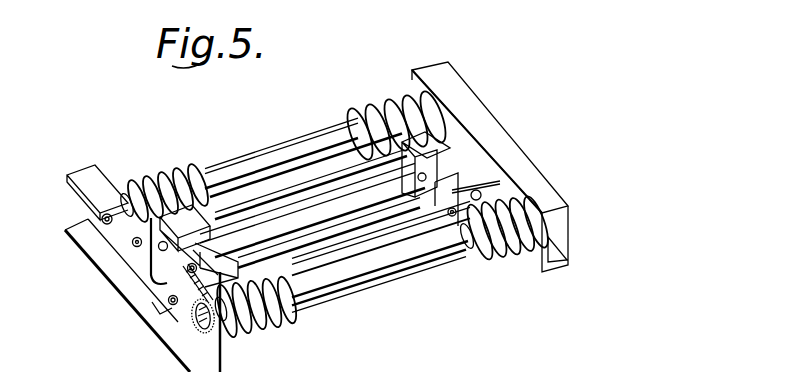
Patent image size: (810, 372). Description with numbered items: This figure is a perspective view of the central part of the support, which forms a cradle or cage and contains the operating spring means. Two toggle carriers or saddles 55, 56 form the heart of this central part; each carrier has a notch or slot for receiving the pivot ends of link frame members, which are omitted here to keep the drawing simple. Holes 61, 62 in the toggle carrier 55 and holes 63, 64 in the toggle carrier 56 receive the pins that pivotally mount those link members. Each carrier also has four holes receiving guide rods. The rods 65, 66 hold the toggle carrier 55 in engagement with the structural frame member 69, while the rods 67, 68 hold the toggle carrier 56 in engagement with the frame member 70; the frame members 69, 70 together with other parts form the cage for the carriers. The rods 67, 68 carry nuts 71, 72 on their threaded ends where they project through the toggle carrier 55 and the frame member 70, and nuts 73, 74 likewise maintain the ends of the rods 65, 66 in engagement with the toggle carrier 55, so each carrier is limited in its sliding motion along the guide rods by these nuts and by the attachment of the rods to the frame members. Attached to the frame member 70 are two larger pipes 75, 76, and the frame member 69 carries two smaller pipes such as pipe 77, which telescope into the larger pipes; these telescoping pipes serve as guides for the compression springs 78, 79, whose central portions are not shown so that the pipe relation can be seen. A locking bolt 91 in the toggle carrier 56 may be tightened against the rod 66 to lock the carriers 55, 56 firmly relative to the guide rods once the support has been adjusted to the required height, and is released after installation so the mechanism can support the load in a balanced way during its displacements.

The toggle carrier 55 is at (168, 185).
The toggle carrier 56 is at (428, 140).
The hole 61 is at (212, 184).
The hole 62 is at (270, 326).
The hole 63 is at (412, 189).
The hole 64 is at (452, 216).
The rod 65 is at (249, 236).
The rod 66 is at (317, 219).
The rod 67 is at (336, 257).
The rod 68 is at (292, 191).
The structural frame member 69 is at (538, 187).
The frame member 70 is at (90, 210).
The nut 71 is at (168, 314).
The nut 72 is at (158, 248).
The nut 73 is at (167, 299).
The nut 74 is at (186, 269).
The pipe 75 is at (373, 287).
The pipe 76 is at (266, 146).
The pipe 77 is at (471, 259).
The compression spring 78 is at (135, 182).
The compression spring 79 is at (292, 321).
The locking bolt 91 is at (476, 194).